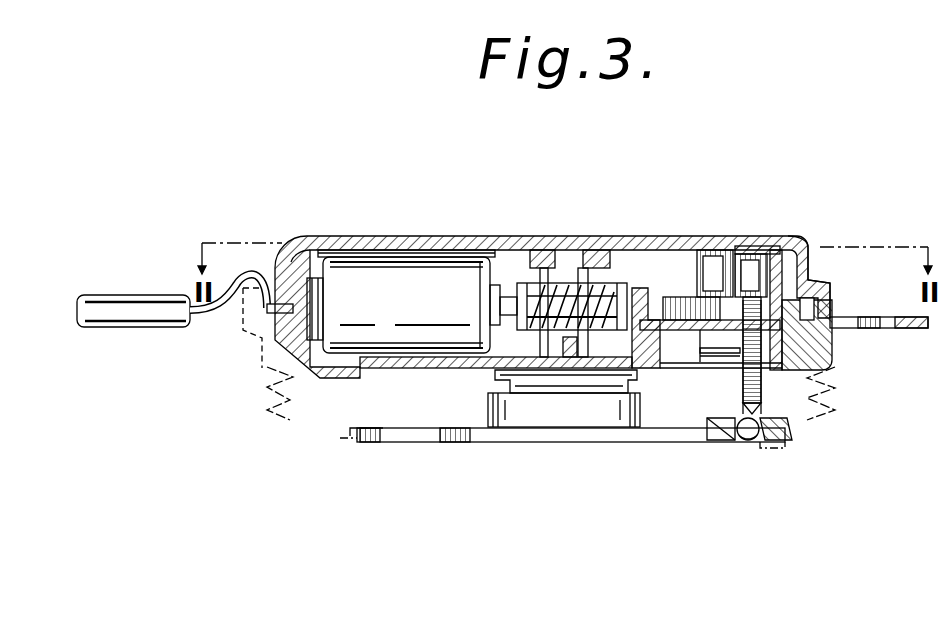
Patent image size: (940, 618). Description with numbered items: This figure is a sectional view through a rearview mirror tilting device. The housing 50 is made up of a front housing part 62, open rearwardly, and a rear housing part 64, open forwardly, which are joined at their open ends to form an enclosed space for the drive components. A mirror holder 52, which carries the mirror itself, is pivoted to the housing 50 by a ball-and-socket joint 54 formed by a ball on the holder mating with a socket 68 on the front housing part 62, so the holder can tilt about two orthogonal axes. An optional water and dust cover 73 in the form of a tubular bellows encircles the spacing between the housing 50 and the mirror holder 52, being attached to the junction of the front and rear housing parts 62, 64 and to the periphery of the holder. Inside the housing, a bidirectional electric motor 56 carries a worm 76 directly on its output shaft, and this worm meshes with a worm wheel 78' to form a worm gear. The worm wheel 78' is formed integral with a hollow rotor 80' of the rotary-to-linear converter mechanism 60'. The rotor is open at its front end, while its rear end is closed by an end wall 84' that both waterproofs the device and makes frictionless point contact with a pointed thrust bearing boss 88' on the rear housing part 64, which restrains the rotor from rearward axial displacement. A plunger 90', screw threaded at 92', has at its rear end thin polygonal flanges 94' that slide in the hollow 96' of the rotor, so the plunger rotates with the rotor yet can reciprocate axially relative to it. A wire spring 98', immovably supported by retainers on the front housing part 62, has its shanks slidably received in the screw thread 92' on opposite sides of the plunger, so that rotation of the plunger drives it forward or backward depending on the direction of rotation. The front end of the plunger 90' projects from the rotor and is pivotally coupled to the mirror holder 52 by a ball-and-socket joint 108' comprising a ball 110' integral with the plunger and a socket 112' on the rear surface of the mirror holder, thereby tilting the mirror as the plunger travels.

The housing 50 is at (487, 228).
The mirror holder 52 is at (500, 442).
The ball-and-socket joint 54 is at (567, 420).
The first bidirectional electric motor 56 is at (388, 268).
The second rotary-to-linear converter mechanism 60' is at (838, 283).
The front housing part 62 is at (436, 368).
The rear housing part 64 is at (427, 250).
The socket 68 is at (547, 385).
The water and dust cover 73 is at (837, 384).
The worm 76 is at (613, 300).
The worm wheel 78' is at (784, 289).
The hollow rotor 80' is at (717, 238).
The end wall 84' is at (805, 268).
The thrust bearing boss 88' is at (755, 203).
The plunger 90' is at (811, 382).
The screw thread 92' is at (715, 397).
The flanges 94' is at (762, 241).
The hollow 96' is at (829, 227).
The wire spring 98' is at (700, 373).
The ball-and-socket joint 108' is at (741, 476).
The ball 110' is at (763, 468).
The socket 112' is at (809, 456).